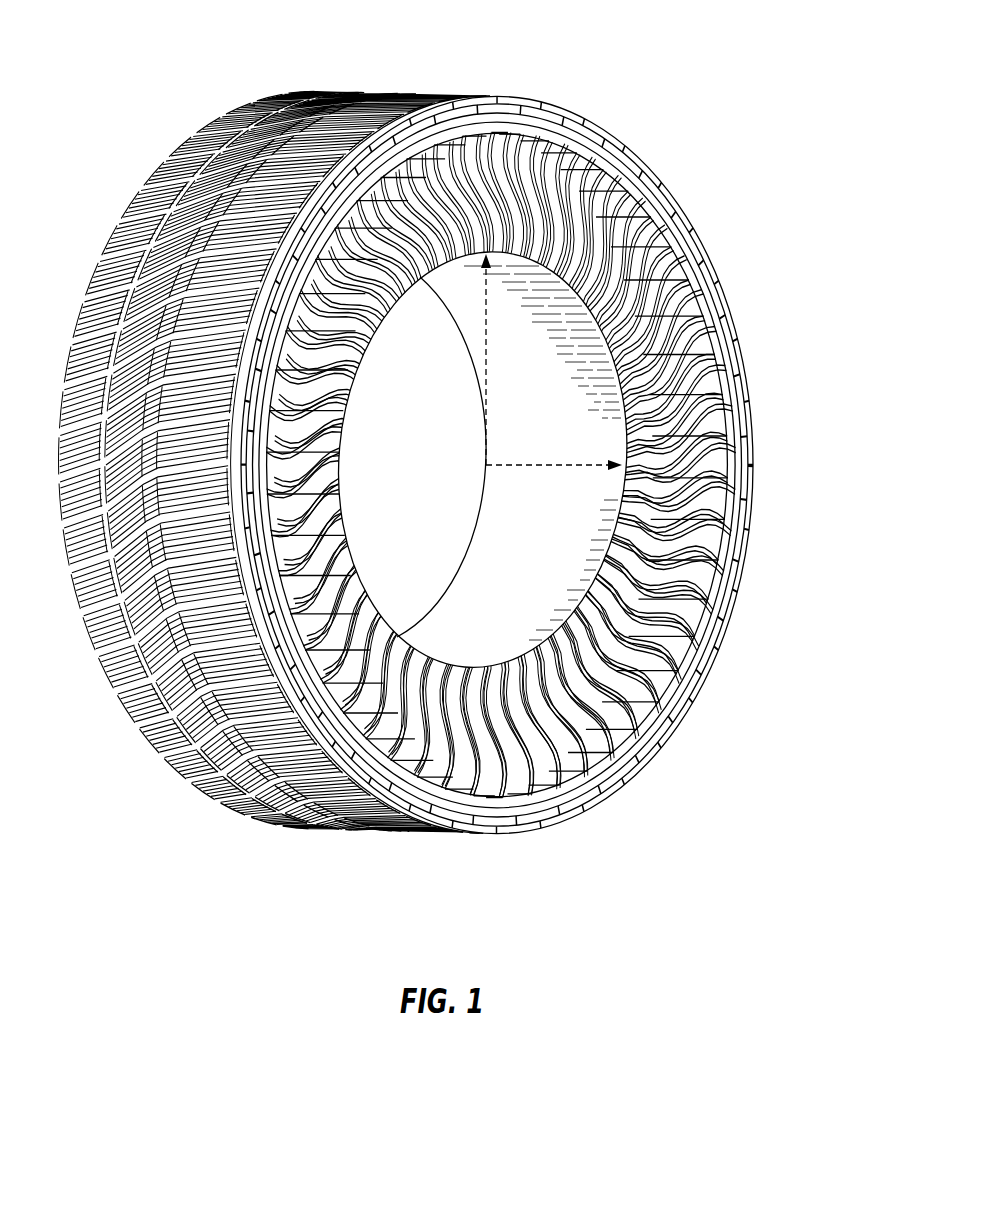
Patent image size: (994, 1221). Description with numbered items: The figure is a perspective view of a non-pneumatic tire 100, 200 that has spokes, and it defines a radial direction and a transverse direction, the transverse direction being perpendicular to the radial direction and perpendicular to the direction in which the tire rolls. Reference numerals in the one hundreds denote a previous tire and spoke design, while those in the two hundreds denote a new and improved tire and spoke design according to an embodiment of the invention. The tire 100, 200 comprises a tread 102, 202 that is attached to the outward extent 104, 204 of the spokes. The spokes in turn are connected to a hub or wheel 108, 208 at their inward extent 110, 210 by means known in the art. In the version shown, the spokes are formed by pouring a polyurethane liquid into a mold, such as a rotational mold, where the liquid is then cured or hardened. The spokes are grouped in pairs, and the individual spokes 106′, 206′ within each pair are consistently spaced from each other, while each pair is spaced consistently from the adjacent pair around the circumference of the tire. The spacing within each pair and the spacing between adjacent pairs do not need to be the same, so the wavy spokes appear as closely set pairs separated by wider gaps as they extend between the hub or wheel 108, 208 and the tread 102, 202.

The tire 100 is at (453, 455).
The tire 200 is at (163, 55).
The tread 102 is at (274, 485).
The tread 202 is at (262, 808).
The outward extent 104 is at (497, 492).
The outward extent 204 is at (473, 800).
The spoke 106′ is at (484, 447).
The spoke 206′ is at (558, 642).
The hub or wheel 108 is at (483, 460).
The hub or wheel 208 is at (483, 460).
The inward extent 110 is at (483, 460).
The inward extent 210 is at (627, 493).